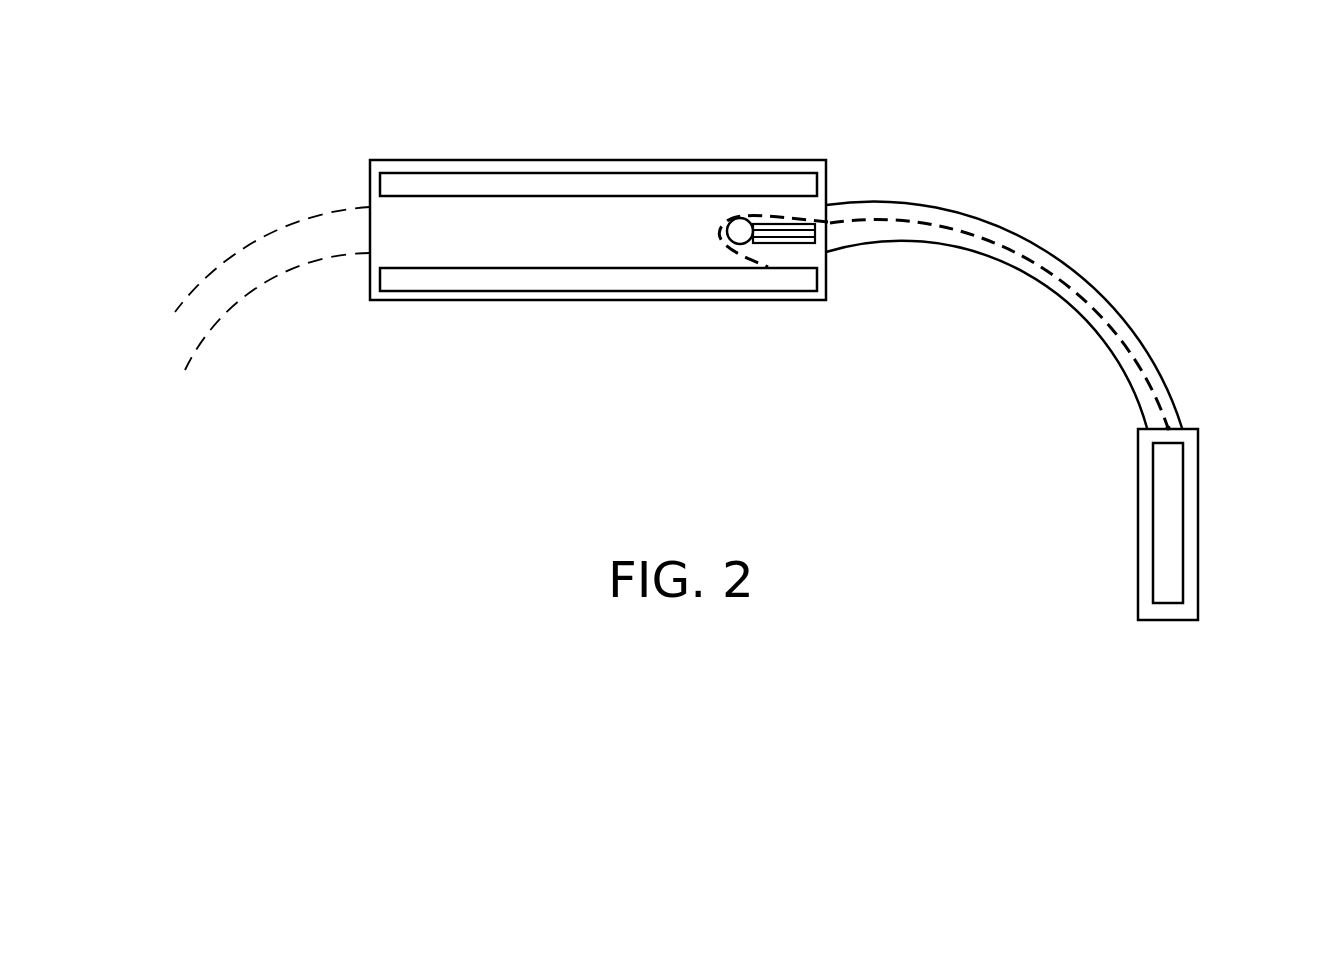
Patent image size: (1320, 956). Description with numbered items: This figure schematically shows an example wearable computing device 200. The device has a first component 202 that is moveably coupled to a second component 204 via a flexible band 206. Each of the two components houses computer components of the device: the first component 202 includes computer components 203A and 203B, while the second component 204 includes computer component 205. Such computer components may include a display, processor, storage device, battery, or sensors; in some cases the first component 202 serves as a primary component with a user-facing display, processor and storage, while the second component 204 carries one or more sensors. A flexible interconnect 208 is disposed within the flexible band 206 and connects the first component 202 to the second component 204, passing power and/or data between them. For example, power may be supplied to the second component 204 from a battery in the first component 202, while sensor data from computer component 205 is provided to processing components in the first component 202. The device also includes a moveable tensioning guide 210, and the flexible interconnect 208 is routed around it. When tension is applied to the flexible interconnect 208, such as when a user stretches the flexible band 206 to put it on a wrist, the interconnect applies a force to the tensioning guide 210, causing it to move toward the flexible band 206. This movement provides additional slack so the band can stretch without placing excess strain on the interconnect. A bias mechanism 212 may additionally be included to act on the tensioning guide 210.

The wearable computing device 200 is at (376, 96).
The first component 202 is at (428, 160).
The computer component 203A is at (492, 197).
The computer component 203B is at (488, 268).
The second component 204 is at (1198, 503).
The computer component 205 is at (1153, 582).
The flexible band 206 is at (955, 210).
The flexible interconnect 208 is at (838, 227).
The moveable tensioning guide 210 is at (729, 224).
The bias mechanism 212 is at (768, 238).